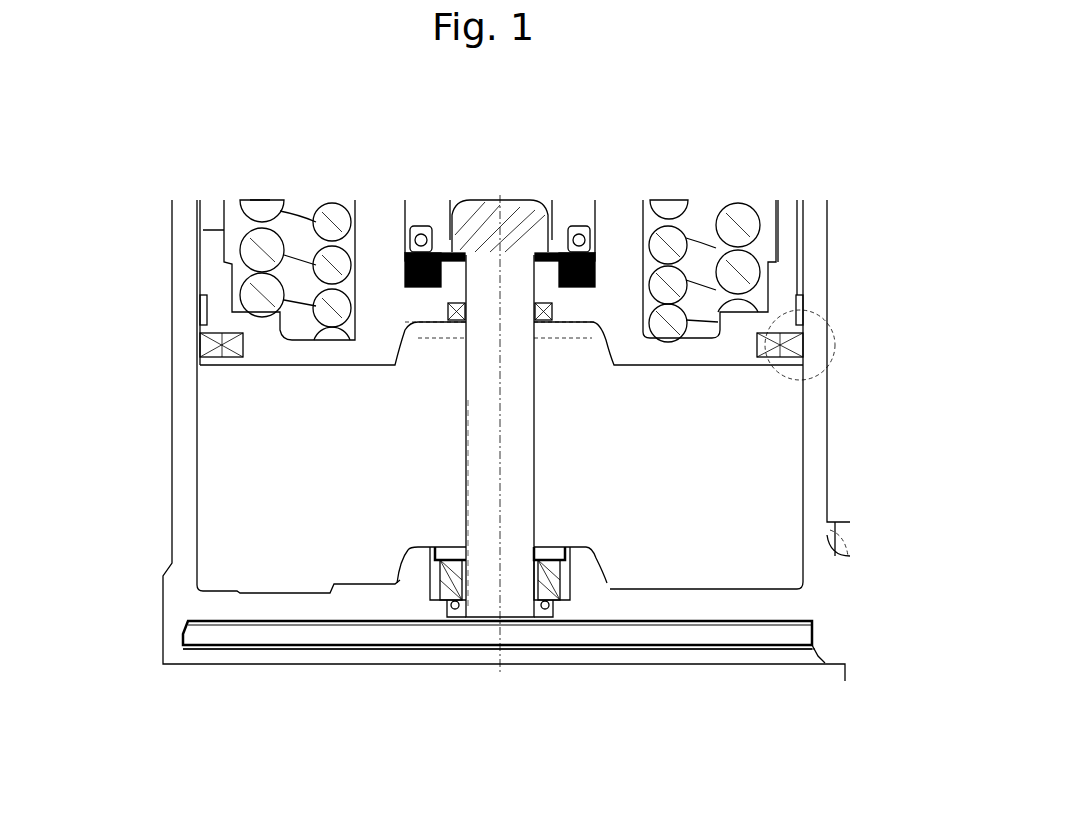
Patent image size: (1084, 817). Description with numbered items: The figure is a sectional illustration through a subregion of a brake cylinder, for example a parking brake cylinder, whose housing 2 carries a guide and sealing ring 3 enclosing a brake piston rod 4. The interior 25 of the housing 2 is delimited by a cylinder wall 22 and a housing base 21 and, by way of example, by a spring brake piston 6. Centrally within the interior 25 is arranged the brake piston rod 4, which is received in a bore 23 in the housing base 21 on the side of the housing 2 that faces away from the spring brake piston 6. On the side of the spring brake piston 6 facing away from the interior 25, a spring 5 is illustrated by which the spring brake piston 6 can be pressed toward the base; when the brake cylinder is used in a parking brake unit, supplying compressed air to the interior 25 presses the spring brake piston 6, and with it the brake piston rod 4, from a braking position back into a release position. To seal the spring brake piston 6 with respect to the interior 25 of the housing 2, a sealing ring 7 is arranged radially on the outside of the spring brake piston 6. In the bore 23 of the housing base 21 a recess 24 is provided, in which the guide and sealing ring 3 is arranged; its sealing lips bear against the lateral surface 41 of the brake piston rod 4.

The housing 2 is at (158, 470).
The cylinder wall 22 is at (186, 492).
The interior 25 is at (216, 455).
The housing base 21 is at (346, 606).
The spring brake piston 6 is at (727, 335).
The spring 5 is at (745, 226).
The sealing ring 7 is at (800, 347).
The brake piston rod 4 is at (512, 410).
The lateral surface 41 is at (541, 458).
The guide and sealing ring 3 is at (572, 566).
The recess 24 is at (567, 582).
The bore 23 is at (547, 612).